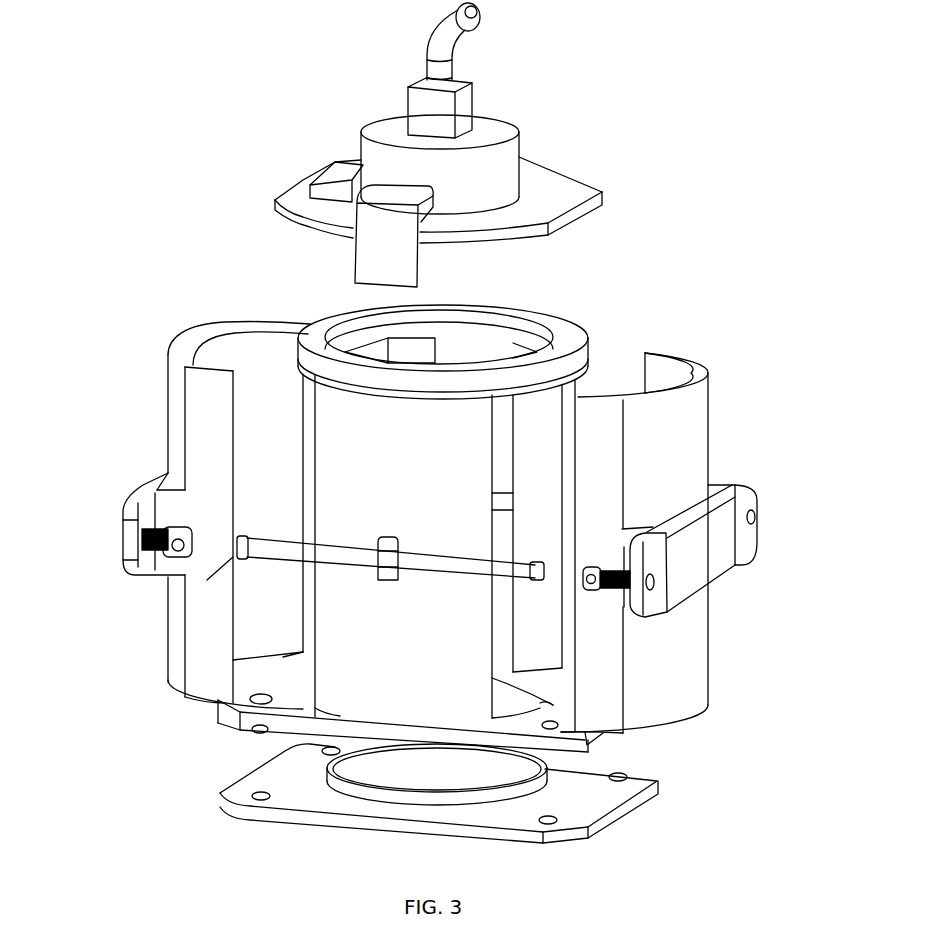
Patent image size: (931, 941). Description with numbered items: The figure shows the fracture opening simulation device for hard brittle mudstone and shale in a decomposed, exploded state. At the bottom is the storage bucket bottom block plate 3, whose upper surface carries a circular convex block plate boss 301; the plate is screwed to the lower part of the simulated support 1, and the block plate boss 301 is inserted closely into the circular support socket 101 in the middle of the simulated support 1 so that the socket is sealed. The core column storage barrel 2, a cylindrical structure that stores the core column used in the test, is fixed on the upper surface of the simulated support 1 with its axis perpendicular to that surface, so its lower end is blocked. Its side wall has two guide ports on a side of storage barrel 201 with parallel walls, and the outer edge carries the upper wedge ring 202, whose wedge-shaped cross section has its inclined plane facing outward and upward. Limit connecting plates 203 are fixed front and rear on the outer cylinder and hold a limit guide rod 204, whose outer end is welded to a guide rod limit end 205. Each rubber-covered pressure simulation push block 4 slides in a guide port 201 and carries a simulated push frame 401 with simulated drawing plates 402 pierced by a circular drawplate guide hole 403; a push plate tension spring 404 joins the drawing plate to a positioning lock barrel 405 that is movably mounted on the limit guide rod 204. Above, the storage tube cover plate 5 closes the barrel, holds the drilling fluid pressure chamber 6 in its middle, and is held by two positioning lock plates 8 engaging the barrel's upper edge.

The simulated support 1 is at (383, 734).
The support socket 101 is at (605, 777).
The core column storage barrel 2 is at (387, 503).
The guide port on a side of storage barrel 201 is at (596, 484).
The upper wedge ring 202 is at (475, 314).
The limit connecting plate 203 is at (239, 487).
The limit guide rod 204 is at (214, 643).
The guide rod limit end 205 is at (315, 589).
The storage bucket bottom block plate 3 is at (439, 799).
The block plate boss 301 is at (437, 807).
The pressure simulation push block 4 is at (658, 554).
The simulated push frame 401 is at (713, 587).
The simulated drawing plate 402 is at (733, 526).
The drawplate guide hole 403 is at (789, 532).
The push plate tension spring 404 is at (680, 465).
The positioning lock barrel 405 is at (114, 522).
The storage tube cover plate 5 is at (447, 167).
The drilling fluid pressure chamber 6 is at (412, 108).
The positioning lock plate 8 is at (327, 220).